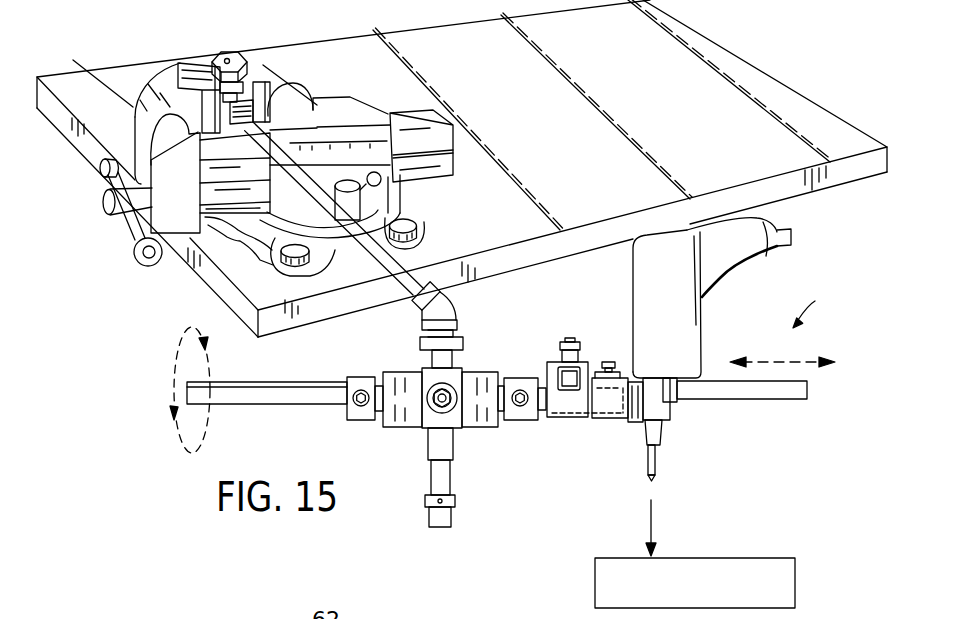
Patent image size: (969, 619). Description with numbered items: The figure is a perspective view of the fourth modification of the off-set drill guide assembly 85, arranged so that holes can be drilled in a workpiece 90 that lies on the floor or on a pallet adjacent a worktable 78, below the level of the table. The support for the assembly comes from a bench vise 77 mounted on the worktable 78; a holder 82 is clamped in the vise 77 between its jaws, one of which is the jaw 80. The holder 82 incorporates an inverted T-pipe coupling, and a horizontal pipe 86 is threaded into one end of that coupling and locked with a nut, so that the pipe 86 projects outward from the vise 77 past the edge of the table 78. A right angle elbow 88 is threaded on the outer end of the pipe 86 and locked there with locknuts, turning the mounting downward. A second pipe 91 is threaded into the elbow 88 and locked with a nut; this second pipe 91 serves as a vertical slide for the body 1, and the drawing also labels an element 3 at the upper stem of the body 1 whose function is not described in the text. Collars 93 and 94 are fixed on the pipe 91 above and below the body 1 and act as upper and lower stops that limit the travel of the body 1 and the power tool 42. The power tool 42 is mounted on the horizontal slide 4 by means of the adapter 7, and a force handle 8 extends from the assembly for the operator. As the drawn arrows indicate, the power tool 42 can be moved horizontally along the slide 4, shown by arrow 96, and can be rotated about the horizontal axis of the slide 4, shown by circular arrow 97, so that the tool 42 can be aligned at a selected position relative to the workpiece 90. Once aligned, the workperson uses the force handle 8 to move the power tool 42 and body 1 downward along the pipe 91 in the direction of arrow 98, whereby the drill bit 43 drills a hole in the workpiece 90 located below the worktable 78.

The body 1 is at (405, 417).
The inlet stem 3 is at (447, 360).
The horizontal slide 4 is at (278, 398).
The adapter 7 is at (620, 424).
The force handle 8 is at (747, 392).
The power tool 42 is at (683, 293).
The drill bit 43 is at (658, 458).
The bench vise 77 is at (319, 62).
The worktable 78 is at (738, 78).
The vise jaw 80 is at (262, 50).
The holder 82 is at (200, 49).
The off-set drill guide assembly 85 is at (823, 304).
The horizontal pipe 86 is at (390, 267).
The right angle elbow 88 is at (420, 315).
The workpiece 90 is at (783, 590).
The second pipe 91 is at (437, 475).
The collar 93 is at (460, 342).
The collar 94 is at (423, 507).
The arrow 96 is at (787, 362).
The circular arrow 97 is at (180, 443).
The arrow 98 is at (653, 515).